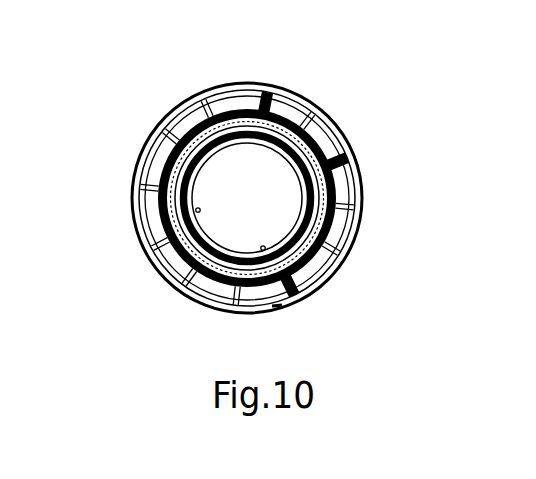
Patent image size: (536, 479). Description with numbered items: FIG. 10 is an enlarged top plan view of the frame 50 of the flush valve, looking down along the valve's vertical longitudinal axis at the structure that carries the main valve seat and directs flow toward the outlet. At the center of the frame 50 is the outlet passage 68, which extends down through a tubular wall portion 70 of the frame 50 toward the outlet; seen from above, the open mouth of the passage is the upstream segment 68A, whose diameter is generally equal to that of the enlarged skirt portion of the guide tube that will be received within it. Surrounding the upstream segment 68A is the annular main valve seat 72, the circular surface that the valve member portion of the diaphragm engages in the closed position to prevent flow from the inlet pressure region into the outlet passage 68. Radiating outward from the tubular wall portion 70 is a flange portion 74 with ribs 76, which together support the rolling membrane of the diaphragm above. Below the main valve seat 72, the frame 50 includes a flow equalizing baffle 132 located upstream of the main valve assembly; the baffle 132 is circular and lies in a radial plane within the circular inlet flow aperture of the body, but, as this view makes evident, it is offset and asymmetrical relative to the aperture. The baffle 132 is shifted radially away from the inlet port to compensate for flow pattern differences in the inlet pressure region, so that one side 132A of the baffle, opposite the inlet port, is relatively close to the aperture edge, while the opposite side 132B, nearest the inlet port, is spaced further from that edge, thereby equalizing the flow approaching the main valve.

The frame 50 is at (300, 93).
The outlet passage 68 is at (263, 206).
The upstream segment 68A is at (282, 305).
The tubular wall portion 70 is at (158, 260).
The annular main valve seat 72 is at (335, 146).
The flange portion 74 is at (356, 158).
The ribs 76 is at (183, 102).
The flow equalizing baffle 132 is at (243, 307).
The one side of the baffle 132A is at (138, 215).
The opposite side of the baffle 132B is at (357, 193).